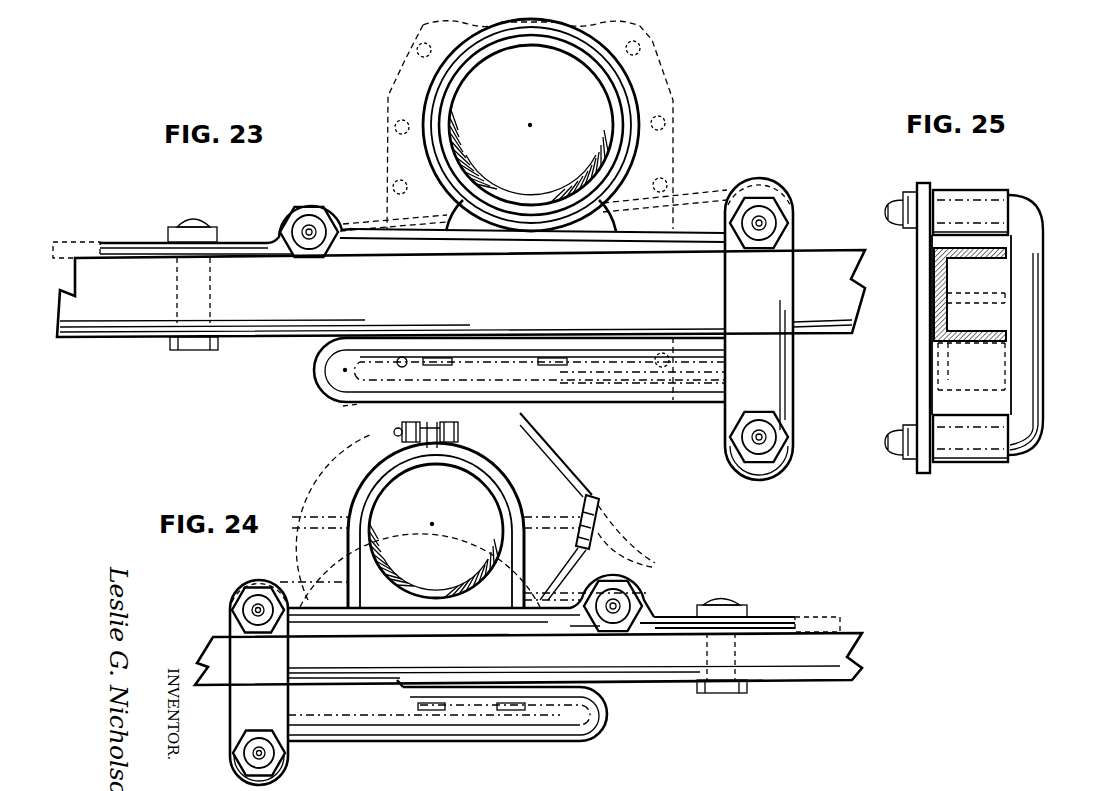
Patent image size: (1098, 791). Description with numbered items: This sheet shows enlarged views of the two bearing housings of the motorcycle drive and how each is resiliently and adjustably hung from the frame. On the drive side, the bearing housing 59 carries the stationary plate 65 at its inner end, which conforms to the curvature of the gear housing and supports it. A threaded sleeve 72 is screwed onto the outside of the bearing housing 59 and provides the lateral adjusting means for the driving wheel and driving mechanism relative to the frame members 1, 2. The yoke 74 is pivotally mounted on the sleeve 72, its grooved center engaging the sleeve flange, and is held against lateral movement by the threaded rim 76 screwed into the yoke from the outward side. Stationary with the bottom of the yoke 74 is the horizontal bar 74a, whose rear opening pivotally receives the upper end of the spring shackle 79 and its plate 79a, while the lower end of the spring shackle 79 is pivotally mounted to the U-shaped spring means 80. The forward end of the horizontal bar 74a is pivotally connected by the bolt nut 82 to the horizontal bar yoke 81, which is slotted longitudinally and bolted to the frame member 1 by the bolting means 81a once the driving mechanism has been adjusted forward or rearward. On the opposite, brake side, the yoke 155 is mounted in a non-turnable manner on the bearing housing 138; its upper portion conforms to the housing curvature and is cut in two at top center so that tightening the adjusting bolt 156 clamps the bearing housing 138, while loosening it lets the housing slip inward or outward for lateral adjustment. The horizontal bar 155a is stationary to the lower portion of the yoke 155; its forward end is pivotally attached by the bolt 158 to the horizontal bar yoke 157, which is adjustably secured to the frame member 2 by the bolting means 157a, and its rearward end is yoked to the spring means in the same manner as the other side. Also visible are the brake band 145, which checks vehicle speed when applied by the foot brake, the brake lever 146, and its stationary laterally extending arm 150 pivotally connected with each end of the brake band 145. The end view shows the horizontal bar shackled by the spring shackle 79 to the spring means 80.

In FIG. 23, the frame member 1 is at (97, 312).
In FIG. 25, the frame member 1 is at (942, 278).
In FIG. 24, the frame member 2 is at (826, 672).
In FIG. 23, the bearing housing 59 is at (450, 117).
In FIG. 23, the stationary plate 65 is at (655, 97).
In FIG. 23, the sleeve 72 is at (442, 122).
In FIG. 23, the yoke 74 is at (437, 72).
In FIG. 23, the horizontal bar 74a is at (618, 235).
In FIG. 25, the horizontal bar 74a is at (1000, 190).
In FIG. 23, the threaded rim 76 is at (438, 96).
In FIG. 25, the spring shackle 79 is at (1036, 440).
In FIG. 23, the plate 79a is at (770, 398).
In FIG. 24, the plate 79a is at (238, 636).
In FIG. 25, the plate 79a is at (926, 383).
In FIG. 23, the U-shaped spring means 80 is at (639, 403).
In FIG. 24, the U-shaped spring means 80 is at (418, 732).
In FIG. 25, the U-shaped spring means 80 is at (968, 460).
In FIG. 23, the horizontal bar yoke 81 is at (128, 246).
In FIG. 23, the bolting means 81a is at (190, 230).
In FIG. 23, the bolt nut 82 is at (307, 222).
In FIG. 24, the bearing housing 138 is at (405, 600).
In FIG. 24, the brake band 145 is at (571, 472).
In FIG. 24, the brake lever 146 is at (628, 560).
In FIG. 24, the laterally extending arm 150 is at (593, 510).
In FIG. 24, the yoke 155 is at (362, 480).
In FIG. 24, the horizontal bar 155a is at (530, 612).
In FIG. 24, the adjusting bolt 156 is at (434, 446).
In FIG. 24, the horizontal bar yoke 157 is at (767, 616).
In FIG. 24, the bolting means 157a is at (727, 611).
In FIG. 24, the bolt 158 is at (628, 604).